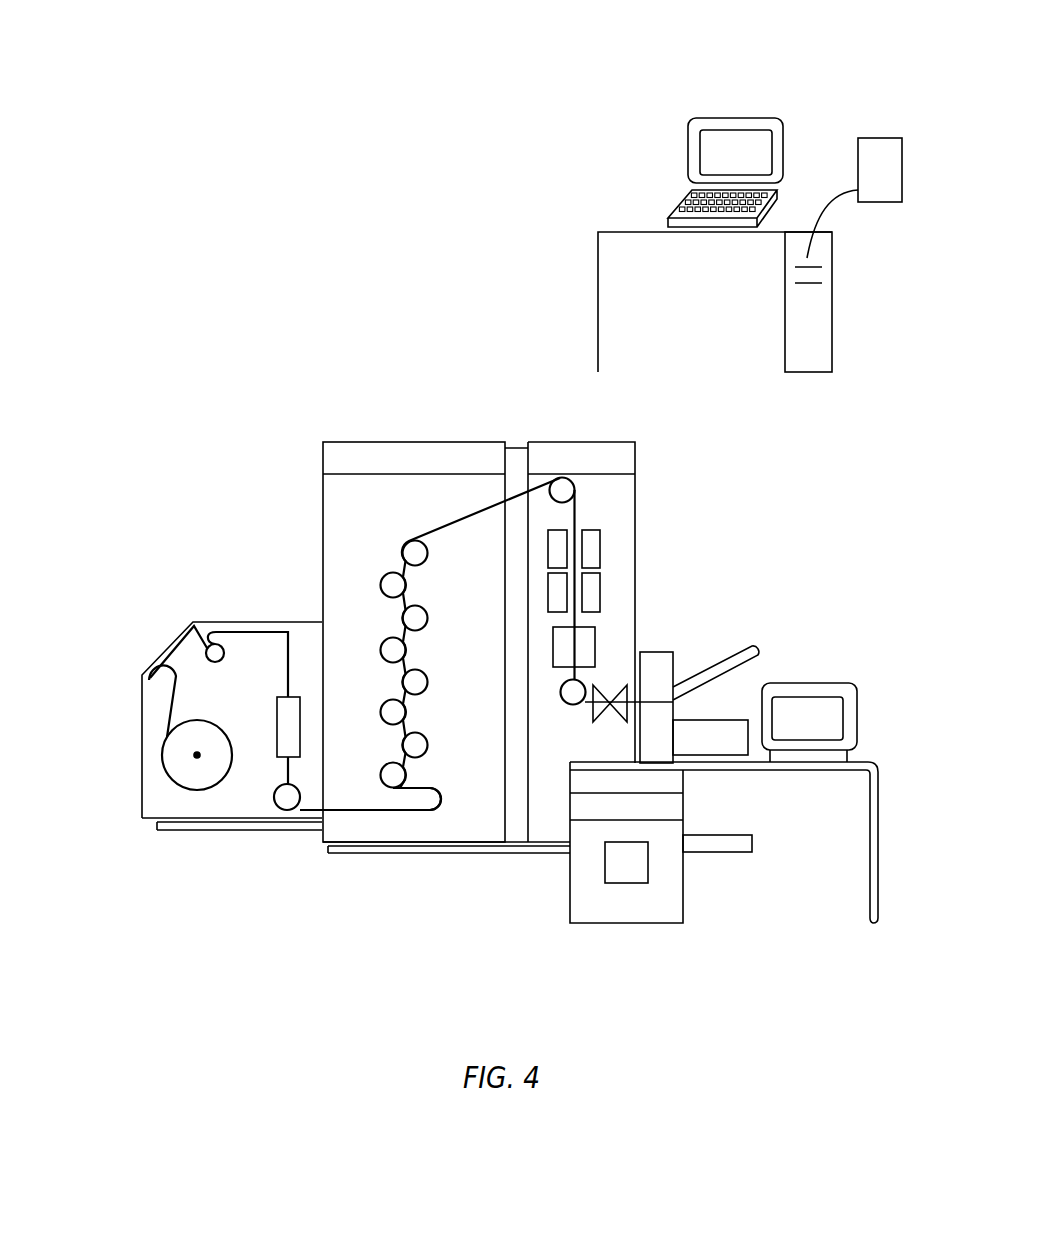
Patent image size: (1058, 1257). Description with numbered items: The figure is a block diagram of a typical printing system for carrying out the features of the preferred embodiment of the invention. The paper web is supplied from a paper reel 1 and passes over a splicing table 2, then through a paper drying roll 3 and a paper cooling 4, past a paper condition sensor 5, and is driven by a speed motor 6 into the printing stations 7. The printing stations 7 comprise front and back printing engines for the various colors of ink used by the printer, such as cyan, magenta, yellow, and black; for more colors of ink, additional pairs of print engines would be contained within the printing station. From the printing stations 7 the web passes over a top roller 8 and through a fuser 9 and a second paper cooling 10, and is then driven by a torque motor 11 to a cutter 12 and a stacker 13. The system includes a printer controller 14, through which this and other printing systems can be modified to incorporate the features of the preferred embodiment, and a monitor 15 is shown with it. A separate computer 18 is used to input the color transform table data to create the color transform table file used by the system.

The paper reel 1 is at (197, 755).
The splicing table 2 is at (157, 668).
The paper drying roll 3 is at (240, 620).
The paper cooling 4 is at (279, 729).
The paper condition sensor 5 is at (268, 803).
The speed motor 6 is at (443, 800).
The printing stations 7 is at (352, 556).
The top roller 8 is at (563, 463).
The fuser 9 is at (580, 510).
The paper cooling 10 is at (602, 590).
The torque motor 11 is at (588, 685).
The cutter 12 is at (618, 687).
The stacker 13 is at (733, 708).
The printer controller 14 is at (610, 915).
The monitor 15 is at (815, 712).
The computer 18 is at (790, 230).